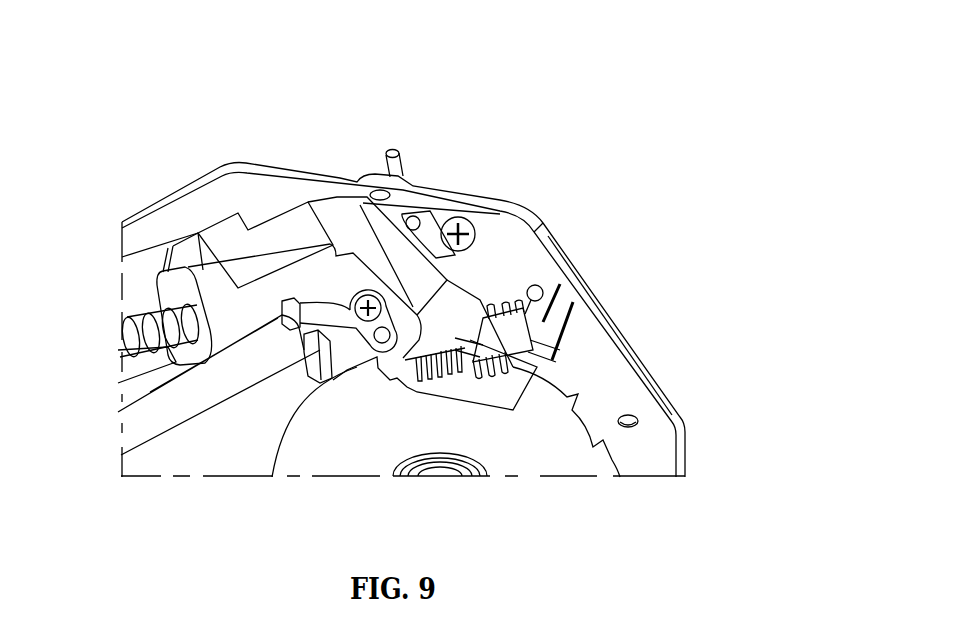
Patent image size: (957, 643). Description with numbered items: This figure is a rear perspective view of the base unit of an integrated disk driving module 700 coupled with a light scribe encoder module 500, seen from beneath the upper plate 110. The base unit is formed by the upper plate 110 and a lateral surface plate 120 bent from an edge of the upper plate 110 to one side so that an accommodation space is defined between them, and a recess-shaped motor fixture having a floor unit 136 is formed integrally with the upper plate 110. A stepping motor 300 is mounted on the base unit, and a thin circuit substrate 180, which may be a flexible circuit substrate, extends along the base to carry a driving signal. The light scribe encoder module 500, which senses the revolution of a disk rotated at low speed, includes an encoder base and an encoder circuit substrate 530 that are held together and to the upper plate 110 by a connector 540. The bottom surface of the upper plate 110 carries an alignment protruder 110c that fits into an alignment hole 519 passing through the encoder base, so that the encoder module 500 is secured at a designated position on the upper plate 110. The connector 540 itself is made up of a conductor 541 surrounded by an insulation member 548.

The integrated disk driving module 700 is at (240, 133).
The stepping motor 300 is at (200, 276).
The upper plate 110 is at (618, 401).
The alignment protruder 110c is at (408, 216).
The lateral surface plate 120 is at (643, 347).
The alignment hole 519 is at (426, 217).
The connector 540 is at (466, 218).
The encoder circuit substrate 530 is at (537, 221).
The light scribe encoder module 500 is at (518, 265).
The conductor 541 is at (529, 309).
The insulation member 548 is at (510, 337).
The circuit substrate 180 is at (470, 388).
The floor unit 136 is at (496, 445).